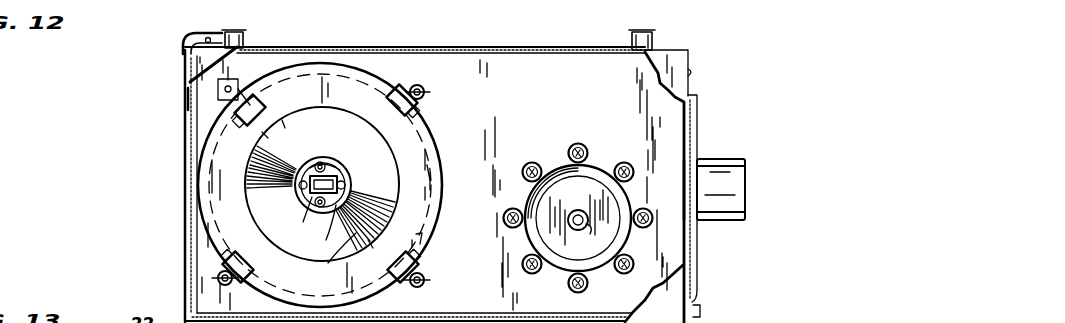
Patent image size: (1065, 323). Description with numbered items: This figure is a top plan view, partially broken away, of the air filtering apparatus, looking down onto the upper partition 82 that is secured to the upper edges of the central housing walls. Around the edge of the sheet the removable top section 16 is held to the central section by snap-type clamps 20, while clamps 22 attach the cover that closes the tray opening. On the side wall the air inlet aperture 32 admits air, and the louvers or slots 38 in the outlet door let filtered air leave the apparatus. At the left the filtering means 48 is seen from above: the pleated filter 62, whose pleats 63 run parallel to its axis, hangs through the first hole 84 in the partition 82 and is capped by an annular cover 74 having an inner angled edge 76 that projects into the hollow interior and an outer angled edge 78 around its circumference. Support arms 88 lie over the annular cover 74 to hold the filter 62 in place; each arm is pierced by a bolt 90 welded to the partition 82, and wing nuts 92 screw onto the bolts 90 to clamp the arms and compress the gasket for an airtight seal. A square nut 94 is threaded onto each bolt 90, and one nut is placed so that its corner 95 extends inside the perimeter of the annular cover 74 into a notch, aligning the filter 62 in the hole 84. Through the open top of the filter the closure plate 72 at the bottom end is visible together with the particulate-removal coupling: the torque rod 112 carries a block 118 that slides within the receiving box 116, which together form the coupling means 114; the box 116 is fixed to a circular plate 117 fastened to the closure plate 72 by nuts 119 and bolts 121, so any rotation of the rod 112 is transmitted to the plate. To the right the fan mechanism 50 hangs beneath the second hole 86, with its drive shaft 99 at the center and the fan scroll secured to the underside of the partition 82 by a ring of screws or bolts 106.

The removable top section 16 is at (670, 65).
The snap-type clamps 20 is at (246, 34).
The clamps 22 is at (207, 33).
The air inlet aperture 32 is at (731, 168).
The louvers or slots 38 is at (697, 252).
The filtering means 48 is at (448, 132).
The fan mechanism 50 is at (580, 192).
The filter 62 is at (418, 165).
The pleats 63 is at (333, 260).
The closure plate 72 is at (322, 163).
The annular cover 74 is at (435, 185).
The inner angled edge 76 is at (395, 160).
The outer angled edge 78 is at (442, 202).
The upper partition 82 is at (570, 107).
The first hole 84 is at (437, 247).
The second hole 86 is at (628, 200).
The support arms 88 is at (262, 103).
The bolts 90 is at (208, 101).
The wing nuts 92 is at (432, 92).
The square nut 94 is at (218, 88).
The corner 95 is at (235, 120).
The drive shaft 99 is at (580, 233).
The screws or bolts 106 is at (535, 163).
The torque rod 112 is at (301, 219).
The coupling means 114 is at (292, 198).
The receiving box 116 is at (316, 233).
The circular plate 117 is at (345, 177).
The block or tongue 118 is at (316, 170).
The nuts 119 is at (330, 165).
The bolts 121 is at (334, 172).